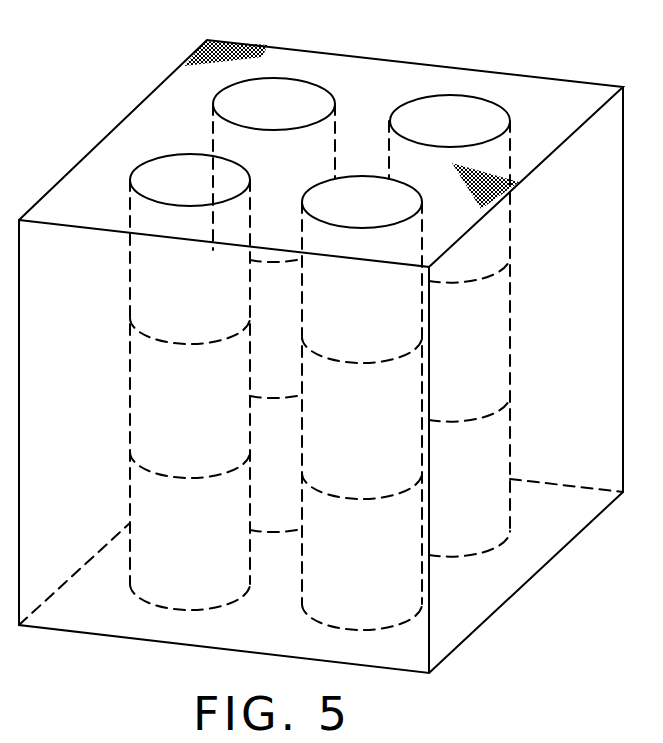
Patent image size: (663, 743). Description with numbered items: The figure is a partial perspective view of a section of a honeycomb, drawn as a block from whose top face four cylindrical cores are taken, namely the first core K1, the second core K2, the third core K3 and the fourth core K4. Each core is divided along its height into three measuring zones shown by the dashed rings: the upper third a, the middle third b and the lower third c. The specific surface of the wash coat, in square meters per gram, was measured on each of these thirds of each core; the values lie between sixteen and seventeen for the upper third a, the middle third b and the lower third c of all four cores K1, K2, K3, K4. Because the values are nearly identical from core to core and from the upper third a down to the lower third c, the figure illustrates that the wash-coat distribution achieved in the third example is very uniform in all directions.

The first core K1 is at (150, 162).
The second core K2 is at (285, 88).
The third core K3 is at (451, 105).
The fourth core K4 is at (352, 190).
The upper third a is at (236, 136).
The middle third b is at (160, 413).
The lower third c is at (157, 502).